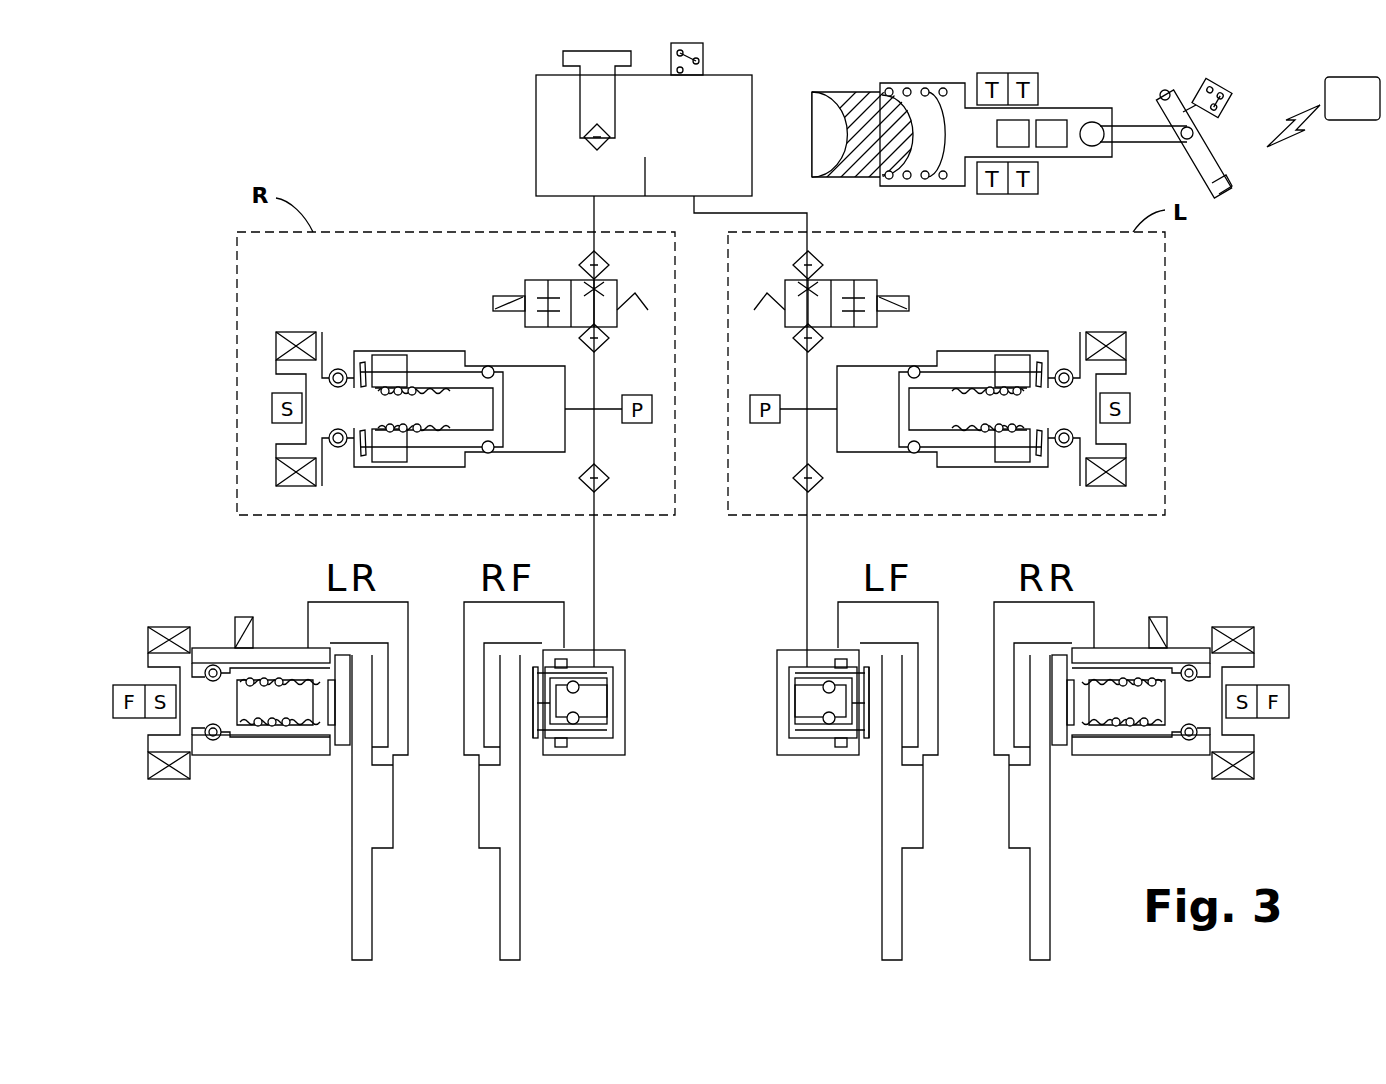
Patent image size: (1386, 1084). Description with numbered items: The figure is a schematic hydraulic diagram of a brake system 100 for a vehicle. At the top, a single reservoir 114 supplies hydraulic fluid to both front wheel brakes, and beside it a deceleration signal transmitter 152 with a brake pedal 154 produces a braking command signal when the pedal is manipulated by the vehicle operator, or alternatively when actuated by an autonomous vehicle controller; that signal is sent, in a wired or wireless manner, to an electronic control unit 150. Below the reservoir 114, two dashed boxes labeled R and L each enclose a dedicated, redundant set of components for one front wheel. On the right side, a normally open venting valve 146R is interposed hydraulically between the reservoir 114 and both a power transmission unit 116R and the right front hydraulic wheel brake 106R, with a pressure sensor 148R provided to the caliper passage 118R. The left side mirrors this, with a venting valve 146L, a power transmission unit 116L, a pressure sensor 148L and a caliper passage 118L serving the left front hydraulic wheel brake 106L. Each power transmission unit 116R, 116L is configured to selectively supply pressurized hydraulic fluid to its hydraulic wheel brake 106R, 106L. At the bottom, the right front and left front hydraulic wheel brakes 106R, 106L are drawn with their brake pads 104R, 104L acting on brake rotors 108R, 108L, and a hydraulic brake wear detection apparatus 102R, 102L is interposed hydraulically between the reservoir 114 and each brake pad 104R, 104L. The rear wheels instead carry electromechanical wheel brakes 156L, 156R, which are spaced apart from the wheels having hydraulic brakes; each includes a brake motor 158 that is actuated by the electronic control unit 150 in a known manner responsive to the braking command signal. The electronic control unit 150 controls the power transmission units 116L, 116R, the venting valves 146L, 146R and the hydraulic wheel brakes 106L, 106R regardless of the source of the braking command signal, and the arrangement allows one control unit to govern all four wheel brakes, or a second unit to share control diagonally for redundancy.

The brake system 100 is at (245, 112).
The reservoir 114 is at (700, 139).
The deceleration signal transmitter 152 is at (1068, 76).
The brake pedal 154 is at (1215, 155).
The electronic control unit 150 is at (1333, 110).
The caliper passage 118R is at (594, 383).
The caliper passage 118L is at (808, 377).
The venting valve 146R is at (547, 272).
The venting valve 146L is at (855, 272).
The power transmission unit 116R is at (415, 330).
The power transmission unit 116L is at (995, 340).
The pressure sensor 148R is at (640, 423).
The pressure sensor 148L is at (762, 423).
The hydraulic wheel brake 106R is at (604, 620).
The hydraulic wheel brake 106L is at (785, 625).
The hydraulic brake wear detection apparatus 102R is at (610, 770).
The hydraulic brake wear detection apparatus 102L is at (789, 762).
The brake pad 104R is at (525, 740).
The brake pad 104L is at (874, 738).
The brake rotor 108R is at (510, 943).
The brake rotor 108L is at (894, 942).
The electromechanical wheel brake 156L is at (325, 782).
The electromechanical wheel brake 156R is at (1077, 782).
The brake motor 158 is at (243, 598).